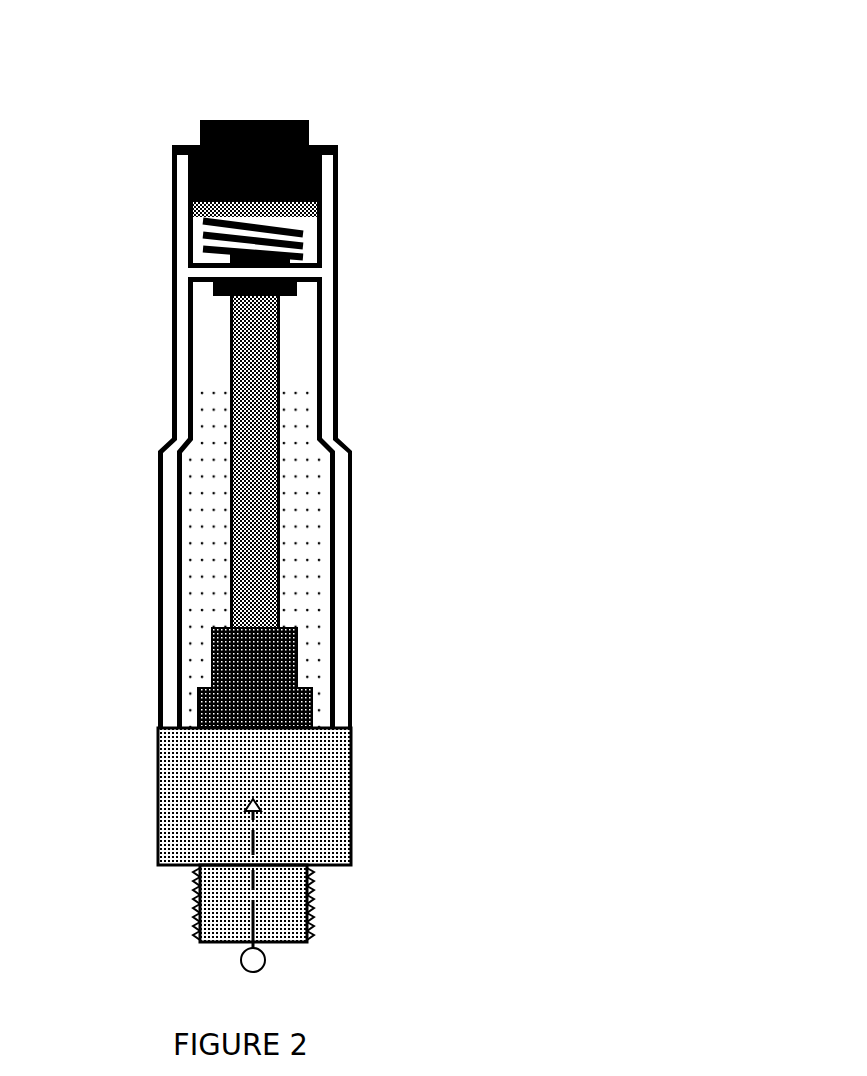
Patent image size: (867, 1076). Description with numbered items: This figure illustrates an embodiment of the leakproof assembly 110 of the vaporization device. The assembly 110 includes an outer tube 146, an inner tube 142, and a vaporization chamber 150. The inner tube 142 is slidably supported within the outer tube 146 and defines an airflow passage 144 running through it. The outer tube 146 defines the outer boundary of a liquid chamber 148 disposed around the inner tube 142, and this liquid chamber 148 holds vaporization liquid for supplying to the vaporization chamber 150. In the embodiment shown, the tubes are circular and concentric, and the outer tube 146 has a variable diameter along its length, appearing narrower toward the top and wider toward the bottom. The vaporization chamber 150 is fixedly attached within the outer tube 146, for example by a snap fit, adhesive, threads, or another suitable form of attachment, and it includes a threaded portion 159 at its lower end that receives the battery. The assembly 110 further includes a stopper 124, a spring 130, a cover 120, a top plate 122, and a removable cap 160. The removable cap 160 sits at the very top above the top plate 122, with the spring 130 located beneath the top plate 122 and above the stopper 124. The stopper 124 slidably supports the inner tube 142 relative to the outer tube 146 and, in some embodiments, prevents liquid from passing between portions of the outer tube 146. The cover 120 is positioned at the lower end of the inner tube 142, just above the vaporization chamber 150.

The assembly 110 is at (462, 95).
The removable cap 160 is at (313, 124).
The top plate 122 is at (195, 213).
The spring 130 is at (307, 247).
The stopper 124 is at (213, 295).
The airflow passage 144 is at (250, 412).
The inner tube 142 is at (227, 518).
The liquid chamber 148 is at (307, 507).
The outer tube 146 is at (344, 562).
The cover 120 is at (198, 695).
The vaporization chamber 150 is at (325, 793).
The threaded portion 159 is at (313, 908).